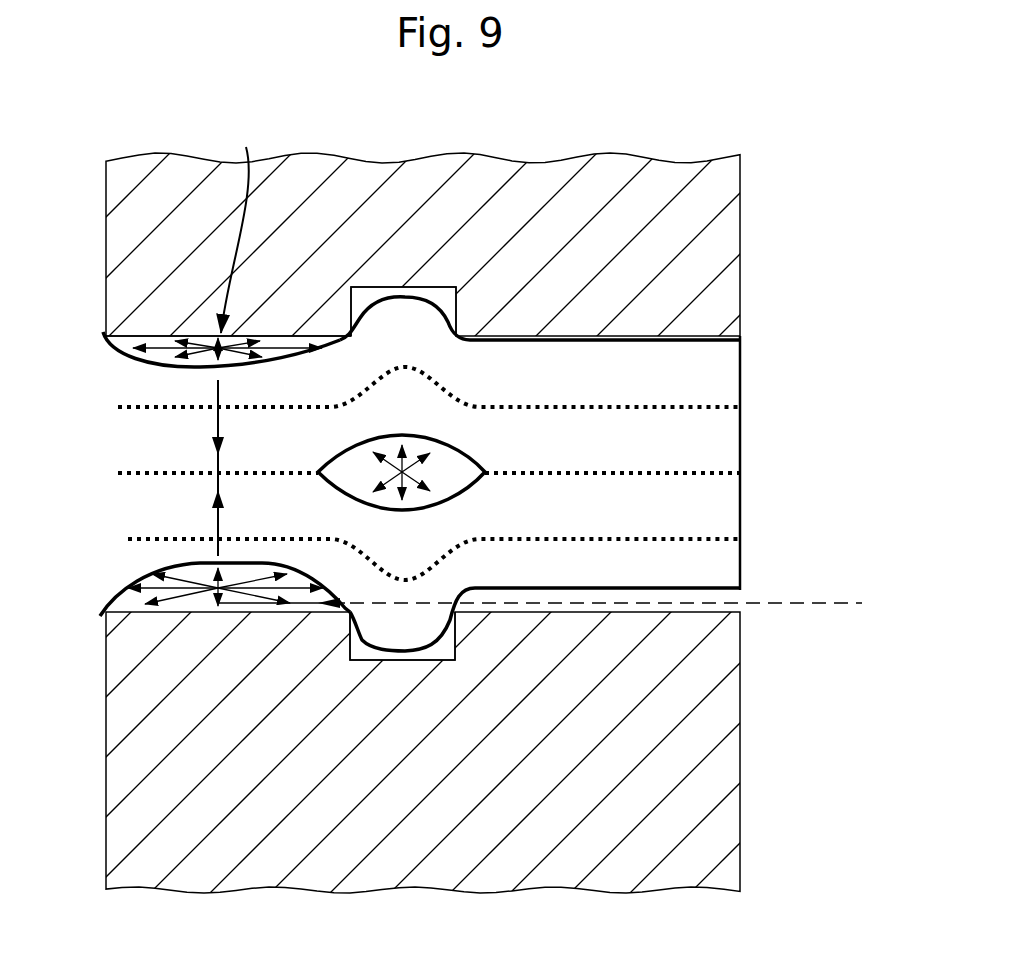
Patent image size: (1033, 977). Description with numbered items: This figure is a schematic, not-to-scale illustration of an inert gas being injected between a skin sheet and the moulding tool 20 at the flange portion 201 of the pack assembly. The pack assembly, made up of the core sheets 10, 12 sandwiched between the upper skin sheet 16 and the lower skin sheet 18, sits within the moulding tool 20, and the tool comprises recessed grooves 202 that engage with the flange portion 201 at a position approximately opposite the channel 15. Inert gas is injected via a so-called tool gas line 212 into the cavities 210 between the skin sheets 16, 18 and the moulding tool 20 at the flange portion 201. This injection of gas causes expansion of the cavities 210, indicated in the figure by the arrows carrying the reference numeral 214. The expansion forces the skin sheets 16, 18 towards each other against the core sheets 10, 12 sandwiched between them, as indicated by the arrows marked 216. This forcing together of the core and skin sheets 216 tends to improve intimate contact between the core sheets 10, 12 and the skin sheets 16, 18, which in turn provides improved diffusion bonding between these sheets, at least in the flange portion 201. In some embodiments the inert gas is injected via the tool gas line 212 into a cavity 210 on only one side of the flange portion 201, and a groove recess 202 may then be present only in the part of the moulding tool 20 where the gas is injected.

The moulding tool 20 is at (717, 223).
The recessed groove 202 is at (437, 293).
The flange portion 201 is at (242, 224).
The cavity 210 is at (157, 348).
The expansion of the cavities 214 is at (290, 352).
The upper skin sheet 16 is at (727, 372).
The core sheet 10 is at (720, 435).
The core sheet 12 is at (722, 500).
The lower skin sheet 18 is at (720, 570).
The channel 15 is at (453, 495).
The forcing together of the core and skin sheets 216 is at (215, 483).
The tool gas line 212 is at (836, 610).